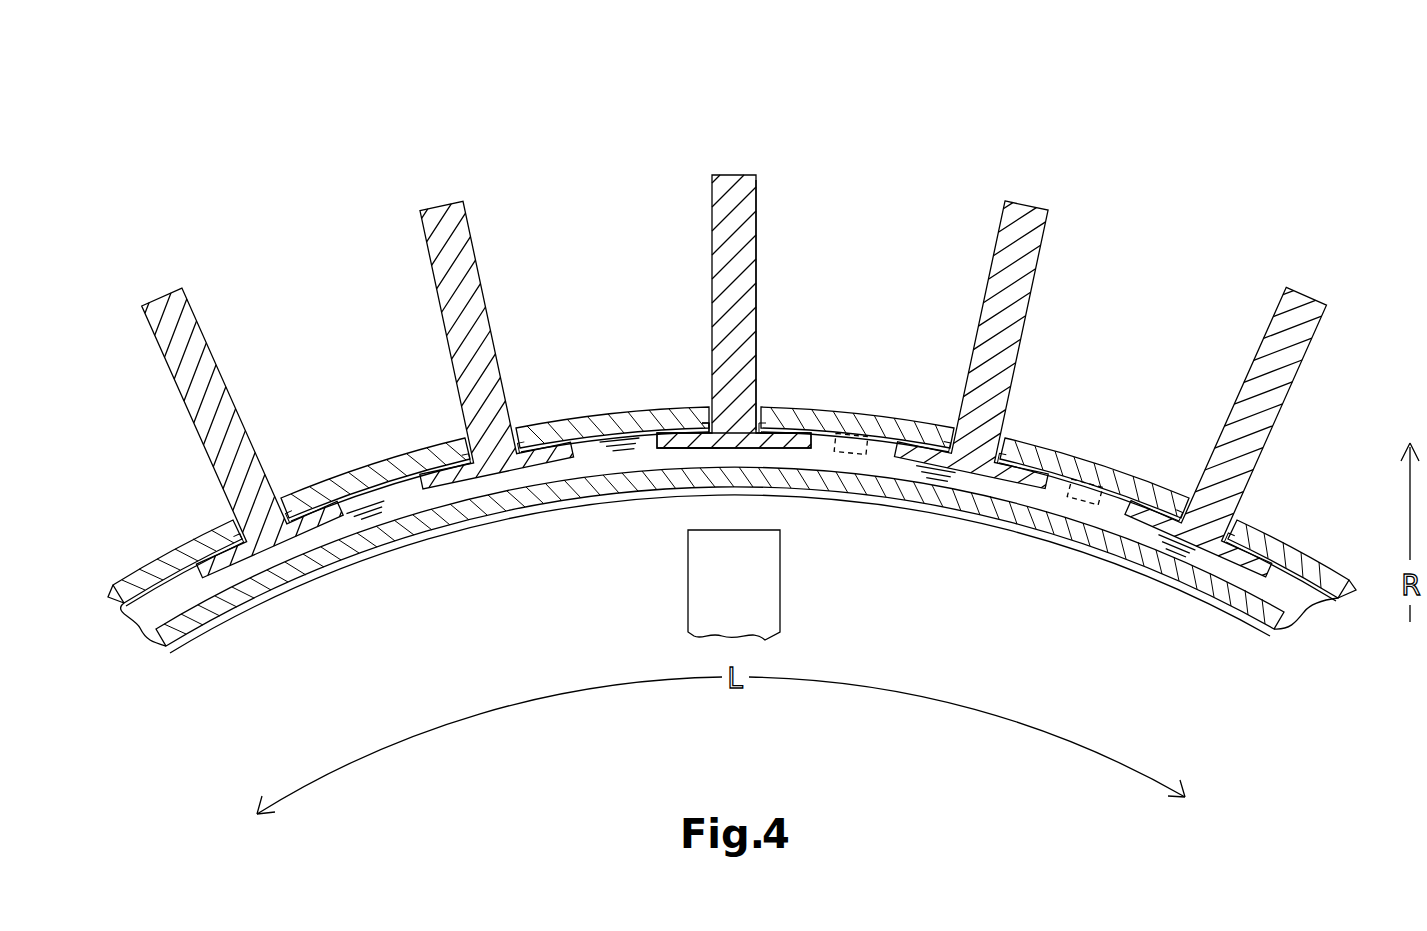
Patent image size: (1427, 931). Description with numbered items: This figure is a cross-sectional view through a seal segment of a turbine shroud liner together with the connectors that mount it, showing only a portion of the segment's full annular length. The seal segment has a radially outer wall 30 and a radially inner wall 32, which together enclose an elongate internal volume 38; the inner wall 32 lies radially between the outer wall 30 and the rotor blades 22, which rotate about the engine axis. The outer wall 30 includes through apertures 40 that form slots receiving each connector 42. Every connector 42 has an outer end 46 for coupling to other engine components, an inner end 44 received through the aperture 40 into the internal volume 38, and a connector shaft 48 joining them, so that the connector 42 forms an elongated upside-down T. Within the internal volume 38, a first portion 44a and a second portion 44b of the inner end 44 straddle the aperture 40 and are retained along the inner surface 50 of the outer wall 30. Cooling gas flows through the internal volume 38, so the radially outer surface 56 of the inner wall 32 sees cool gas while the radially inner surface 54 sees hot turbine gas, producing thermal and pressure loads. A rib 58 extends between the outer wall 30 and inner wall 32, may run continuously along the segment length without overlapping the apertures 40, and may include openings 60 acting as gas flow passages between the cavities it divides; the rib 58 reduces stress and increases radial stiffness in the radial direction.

The rotor blades 22 is at (780, 607).
The radially outer wall 30 is at (379, 459).
The radially inner wall 32 is at (501, 486).
The internal volume 38 is at (405, 488).
The through apertures 40 is at (712, 425).
The connector 42 is at (712, 237).
The inner end 44 is at (760, 453).
The first portion of inner end 44a is at (686, 450).
The second portion of inner end 44b is at (781, 425).
The outer end 46 is at (750, 165).
The connector shaft 48 is at (761, 300).
The inner surface of outer wall 50 is at (1064, 479).
The radially inner surface of inner wall 54 is at (1133, 549).
The radially outer surface of inner wall 56 is at (1262, 584).
The rib 58 is at (586, 468).
The openings 60 is at (862, 436).